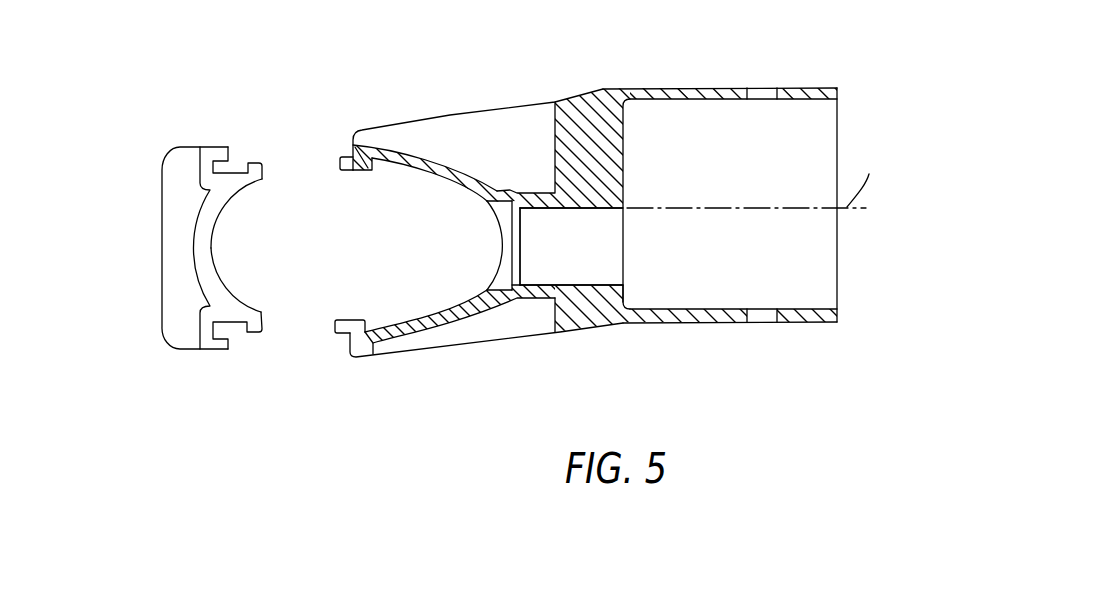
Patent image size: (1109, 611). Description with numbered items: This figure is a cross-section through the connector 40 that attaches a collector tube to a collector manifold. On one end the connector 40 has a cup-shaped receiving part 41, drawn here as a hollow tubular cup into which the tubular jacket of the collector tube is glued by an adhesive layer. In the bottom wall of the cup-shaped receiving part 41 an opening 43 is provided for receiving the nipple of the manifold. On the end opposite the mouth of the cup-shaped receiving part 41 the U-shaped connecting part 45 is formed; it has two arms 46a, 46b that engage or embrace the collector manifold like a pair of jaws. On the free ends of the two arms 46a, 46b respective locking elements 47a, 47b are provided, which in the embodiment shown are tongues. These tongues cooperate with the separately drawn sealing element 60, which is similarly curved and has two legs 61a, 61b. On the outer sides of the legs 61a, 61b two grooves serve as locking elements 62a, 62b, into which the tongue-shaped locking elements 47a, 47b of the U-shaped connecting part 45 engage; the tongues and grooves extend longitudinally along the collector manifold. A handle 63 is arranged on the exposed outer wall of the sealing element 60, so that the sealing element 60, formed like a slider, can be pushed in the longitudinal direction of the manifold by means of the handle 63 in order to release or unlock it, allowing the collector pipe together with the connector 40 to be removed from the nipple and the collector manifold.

The connector 40 is at (611, 273).
The cup-shaped receiving part 41 is at (797, 80).
The opening 43 is at (593, 257).
The U-shaped connecting part 45 is at (437, 348).
The arm 46a is at (418, 156).
The arm 46b is at (393, 340).
The locking element 47a is at (352, 171).
The locking element 47b is at (347, 319).
The sealing element 60 is at (206, 265).
The leg 61a is at (223, 200).
The leg 61b is at (232, 303).
The locking element 62a is at (230, 163).
The locking element 62b is at (233, 339).
The handle 63 is at (171, 294).